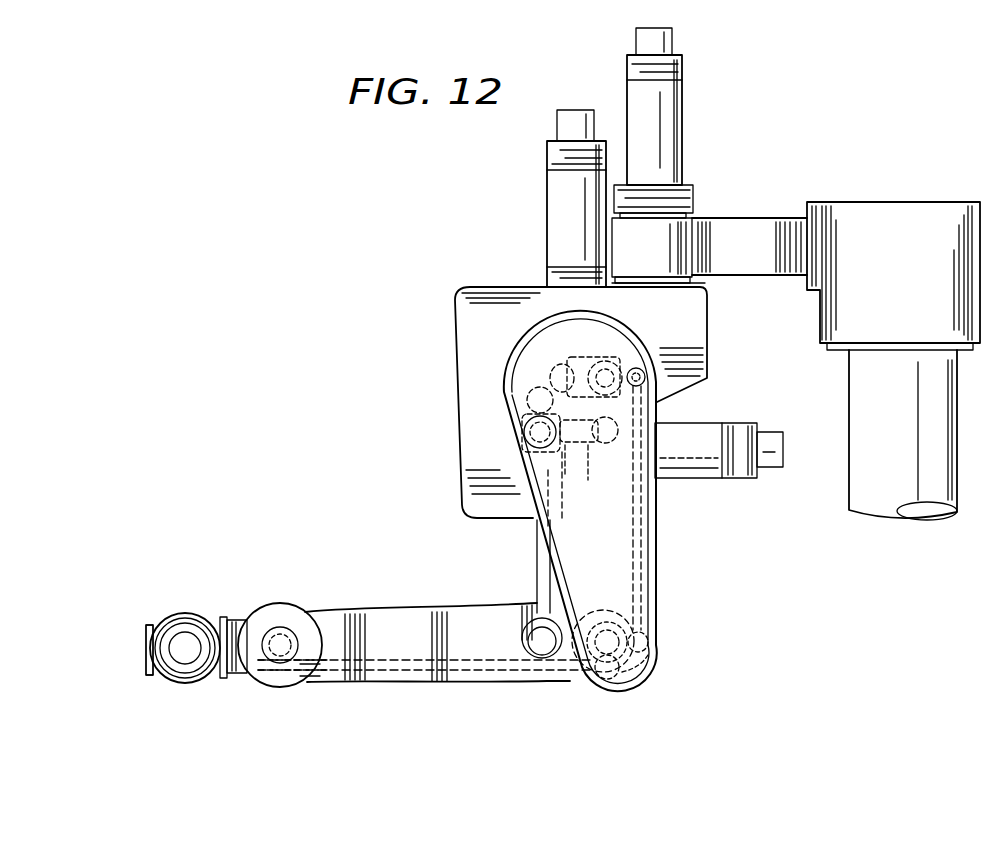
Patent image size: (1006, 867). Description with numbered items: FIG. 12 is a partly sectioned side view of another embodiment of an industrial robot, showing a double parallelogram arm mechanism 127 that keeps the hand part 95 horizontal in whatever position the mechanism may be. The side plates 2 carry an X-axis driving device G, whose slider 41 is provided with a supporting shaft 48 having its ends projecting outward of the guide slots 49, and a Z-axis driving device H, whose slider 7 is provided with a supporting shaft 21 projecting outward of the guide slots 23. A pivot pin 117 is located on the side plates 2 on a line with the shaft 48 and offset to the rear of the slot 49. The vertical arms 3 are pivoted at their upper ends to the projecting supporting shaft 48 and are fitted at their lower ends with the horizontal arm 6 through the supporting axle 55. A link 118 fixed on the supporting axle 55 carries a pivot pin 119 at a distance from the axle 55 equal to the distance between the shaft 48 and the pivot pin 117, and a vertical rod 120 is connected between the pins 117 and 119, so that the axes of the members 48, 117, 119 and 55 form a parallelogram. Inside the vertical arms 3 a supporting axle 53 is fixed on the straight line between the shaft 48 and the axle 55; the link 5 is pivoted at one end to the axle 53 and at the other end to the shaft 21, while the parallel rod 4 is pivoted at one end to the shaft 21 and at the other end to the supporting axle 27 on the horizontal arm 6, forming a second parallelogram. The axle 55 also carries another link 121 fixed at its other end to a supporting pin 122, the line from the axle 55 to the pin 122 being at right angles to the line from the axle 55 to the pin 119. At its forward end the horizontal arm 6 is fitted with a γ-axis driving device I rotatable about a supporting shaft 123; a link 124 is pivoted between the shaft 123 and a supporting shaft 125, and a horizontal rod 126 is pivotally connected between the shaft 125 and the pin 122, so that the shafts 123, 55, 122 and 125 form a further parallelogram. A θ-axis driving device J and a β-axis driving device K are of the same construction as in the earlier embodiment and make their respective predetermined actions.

The side plates 2 is at (470, 323).
The vertical arms 3 is at (612, 513).
The parallel rod 4 is at (537, 580).
The link 5 is at (576, 464).
The horizontal arm 6 is at (432, 612).
The slider 7 is at (568, 475).
The supporting shaft 21 is at (524, 442).
The guide slots 23 is at (528, 406).
The supporting axle 27 is at (537, 681).
The slider 41 is at (573, 357).
The supporting shaft 48 is at (614, 352).
The guide slots 49 is at (579, 420).
The supporting axle 53 is at (606, 445).
The supporting axle 55 is at (595, 619).
The hand part 95 is at (152, 620).
The pivot pin 117 is at (660, 352).
The link 118 is at (622, 611).
The pivot pin 119 is at (662, 649).
The vertical rod 120 is at (648, 577).
The link 121 is at (627, 680).
The supporting pin 122 is at (603, 687).
The supporting shaft 123 is at (280, 634).
The link 124 is at (265, 668).
The supporting shaft 125 is at (308, 688).
The horizontal rod 126 is at (418, 672).
The arm mechanism 127 is at (372, 608).
The X-axis driving device G is at (545, 218).
The Z-axis driving device H is at (742, 422).
The γ-axis driving device I is at (243, 682).
The θ-axis driving device J is at (688, 76).
The β-axis driving device K is at (180, 690).